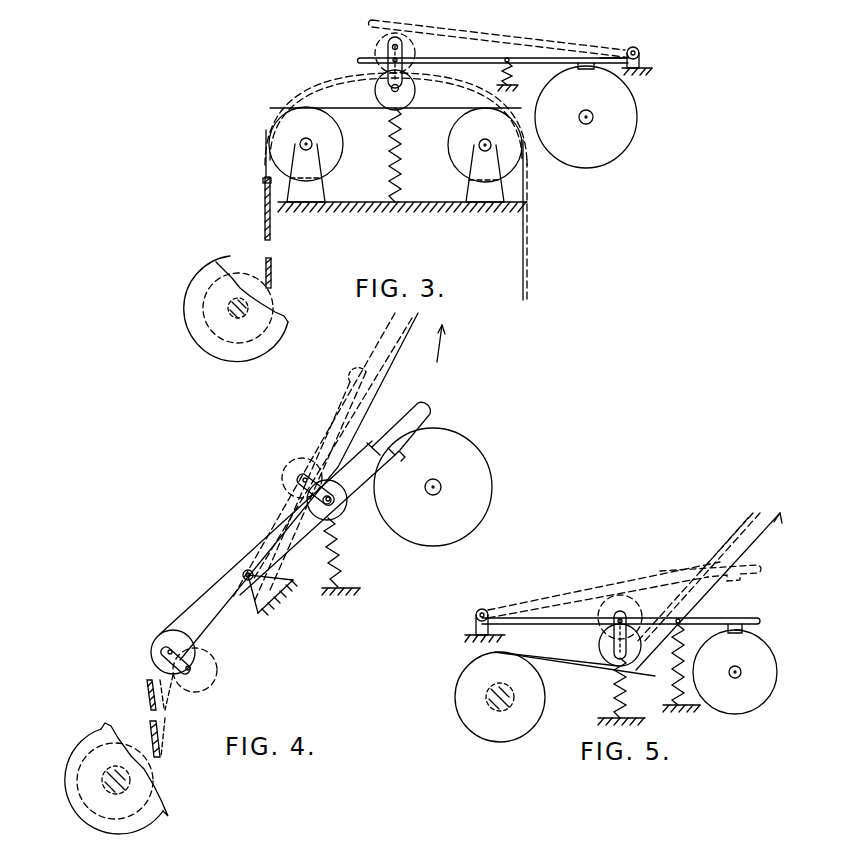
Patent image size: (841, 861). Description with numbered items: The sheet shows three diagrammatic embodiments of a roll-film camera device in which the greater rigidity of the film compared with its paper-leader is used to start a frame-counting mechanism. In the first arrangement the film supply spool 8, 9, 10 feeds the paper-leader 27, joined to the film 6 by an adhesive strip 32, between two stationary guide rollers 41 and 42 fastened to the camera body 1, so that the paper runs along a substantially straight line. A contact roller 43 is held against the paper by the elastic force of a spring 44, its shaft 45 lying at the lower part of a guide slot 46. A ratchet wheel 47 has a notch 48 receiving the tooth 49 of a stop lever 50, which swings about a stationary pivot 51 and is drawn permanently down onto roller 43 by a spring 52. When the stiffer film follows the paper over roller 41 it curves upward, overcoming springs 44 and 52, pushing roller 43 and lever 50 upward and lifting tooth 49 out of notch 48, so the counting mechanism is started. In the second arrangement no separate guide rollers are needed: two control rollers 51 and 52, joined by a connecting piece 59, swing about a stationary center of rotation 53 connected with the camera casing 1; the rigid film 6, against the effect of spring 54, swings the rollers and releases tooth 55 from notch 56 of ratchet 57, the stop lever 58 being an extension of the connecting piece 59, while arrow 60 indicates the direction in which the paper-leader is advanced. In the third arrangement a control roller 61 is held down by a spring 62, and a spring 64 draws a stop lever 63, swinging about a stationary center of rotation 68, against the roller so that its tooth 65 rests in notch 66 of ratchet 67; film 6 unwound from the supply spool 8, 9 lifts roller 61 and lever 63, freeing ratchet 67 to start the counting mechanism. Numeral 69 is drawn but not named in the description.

In FIG. 3, the camera body 1 is at (396, 208).
In FIG. 4, the camera body 1 is at (262, 620).
In FIG. 3, the film 6 is at (264, 215).
In FIG. 4, the film 6 is at (146, 700).
In FIG. 5, the film 6 is at (728, 548).
In FIG. 3, the film supply spool 8 is at (268, 300).
In FIG. 4, the film supply spool 8 is at (162, 778).
In FIG. 5, the film supply spool 8 is at (478, 668).
In FIG. 3, the film supply spool 9 is at (240, 300).
In FIG. 4, the film supply spool 9 is at (118, 770).
In FIG. 5, the film supply spool 9 is at (486, 700).
In FIG. 3, the film supply spool 10 is at (220, 348).
In FIG. 4, the film supply spool 10 is at (150, 827).
In FIG. 3, the paper-leader 27 is at (419, 110).
In FIG. 4, the paper-leader 27 is at (208, 592).
In FIG. 5, the paper-leader 27 is at (570, 665).
In FIG. 3, the adhesive strip 32 is at (262, 180).
In FIG. 3, the stationary guide roller 41 is at (285, 136).
In FIG. 3, the stationary guide roller 42 is at (508, 163).
In FIG. 3, the contact roller 43 is at (380, 93).
In FIG. 3, the spring 44 is at (399, 170).
In FIG. 3, the shaft 45 is at (392, 86).
In FIG. 3, the guide slot 46 is at (388, 40).
In FIG. 3, the ratchet wheel 47 is at (630, 125).
In FIG. 3, the notch 48 is at (593, 81).
In FIG. 3, the tooth 49 is at (587, 67).
In FIG. 3, the stop lever 50 is at (470, 55).
In FIG. 3, the stationary pivot 51 is at (640, 52).
In FIG. 4, the stationary pivot 51 is at (158, 642).
In FIG. 3, the spring 52 is at (513, 75).
In FIG. 4, the spring 52 is at (344, 510).
In FIG. 4, the stationary center of rotation 53 is at (245, 572).
In FIG. 4, the spring 54 is at (340, 565).
In FIG. 4, the tooth 55 is at (385, 450).
In FIG. 4, the notch 56 is at (403, 455).
In FIG. 4, the ratchet 57 is at (485, 472).
In FIG. 4, the stop lever 58 is at (425, 408).
In FIG. 4, the connecting piece 59 is at (300, 528).
In FIG. 4, the arrow 60 is at (439, 350).
In FIG. 5, the control roller 61 is at (630, 650).
In FIG. 5, the spring 62 is at (614, 700).
In FIG. 5, the stop lever 63 is at (707, 617).
In FIG. 5, the spring 64 is at (672, 688).
In FIG. 5, the tooth 65 is at (735, 626).
In FIG. 5, the notch 66 is at (740, 634).
In FIG. 5, the ratchet 67 is at (760, 698).
In FIG. 5, the stationary center of rotation 68 is at (493, 590).
In FIG. 5, the arm 69 is at (763, 535).